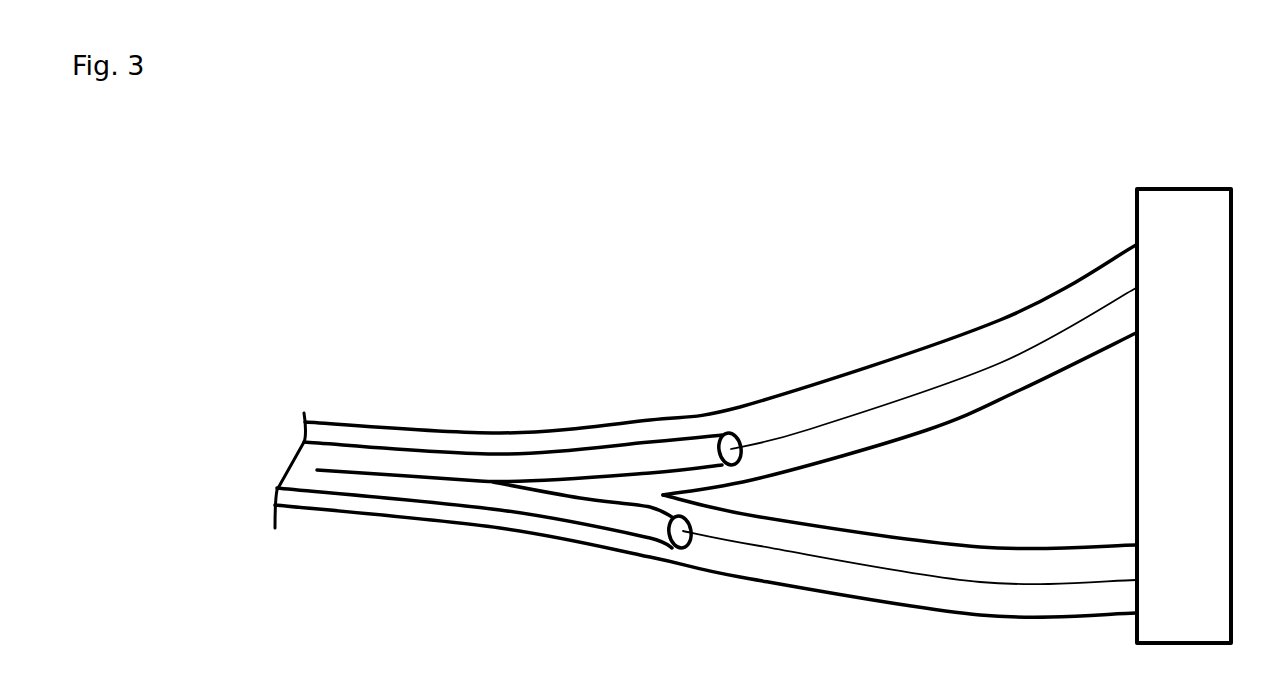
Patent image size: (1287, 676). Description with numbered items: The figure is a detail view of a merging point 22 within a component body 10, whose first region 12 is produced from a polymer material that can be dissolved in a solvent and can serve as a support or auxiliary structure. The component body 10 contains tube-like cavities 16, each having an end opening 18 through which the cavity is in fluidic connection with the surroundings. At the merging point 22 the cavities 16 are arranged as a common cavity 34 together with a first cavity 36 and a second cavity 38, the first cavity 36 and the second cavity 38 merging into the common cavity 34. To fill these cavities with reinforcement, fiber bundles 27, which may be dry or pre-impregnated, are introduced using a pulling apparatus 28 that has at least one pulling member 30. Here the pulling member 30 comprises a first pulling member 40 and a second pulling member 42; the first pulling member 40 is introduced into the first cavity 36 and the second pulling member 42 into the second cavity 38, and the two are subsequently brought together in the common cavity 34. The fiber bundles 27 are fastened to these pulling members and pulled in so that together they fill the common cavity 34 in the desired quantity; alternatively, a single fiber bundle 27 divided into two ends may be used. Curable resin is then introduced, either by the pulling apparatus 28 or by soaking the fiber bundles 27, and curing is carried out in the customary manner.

The component body 10 is at (376, 333).
The first region 12 is at (458, 436).
The tube-like cavities 16 is at (362, 436).
The common cavity 34 is at (528, 446).
The fiber bundles 27 is at (392, 487).
The second pulling member 42 is at (808, 560).
The merging point 22 is at (653, 382).
The first pulling member 40 is at (773, 432).
The second cavity 38 is at (952, 560).
The first cavity 36 is at (890, 390).
The pulling member 30 is at (1005, 358).
The end opening 18 is at (1135, 267).
The pulling apparatus 28 is at (1180, 205).